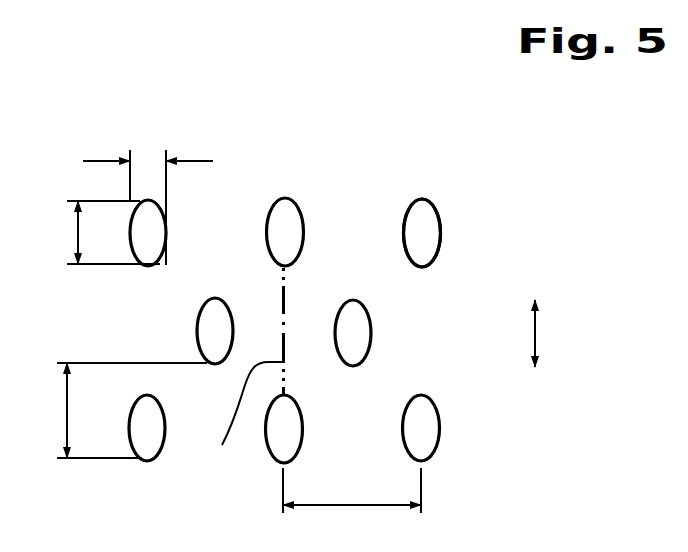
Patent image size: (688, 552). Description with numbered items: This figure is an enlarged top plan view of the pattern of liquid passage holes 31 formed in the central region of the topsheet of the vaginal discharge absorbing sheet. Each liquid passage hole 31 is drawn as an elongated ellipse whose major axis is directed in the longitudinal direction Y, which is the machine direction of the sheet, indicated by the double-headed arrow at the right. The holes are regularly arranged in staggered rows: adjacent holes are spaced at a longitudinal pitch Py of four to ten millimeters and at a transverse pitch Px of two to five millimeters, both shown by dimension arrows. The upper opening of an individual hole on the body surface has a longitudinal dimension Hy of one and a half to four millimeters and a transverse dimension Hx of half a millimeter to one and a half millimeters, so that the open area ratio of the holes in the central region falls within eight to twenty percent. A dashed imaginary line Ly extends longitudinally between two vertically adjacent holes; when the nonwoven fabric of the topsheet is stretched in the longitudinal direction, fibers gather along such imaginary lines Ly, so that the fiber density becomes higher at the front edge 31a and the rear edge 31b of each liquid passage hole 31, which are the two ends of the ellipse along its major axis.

The liquid passage hole 31 is at (412, 204).
The front edge of liquid passage hole 31a is at (425, 200).
The rear edge of liquid passage hole 31b is at (422, 267).
The transverse dimension Hx is at (148, 194).
The longitudinal dimension Hy is at (96, 232).
The transverse pitch Px is at (352, 505).
The longitudinal pitch Py is at (113, 410).
The imaginary line Ly is at (244, 419).
The longitudinal direction Y is at (579, 333).